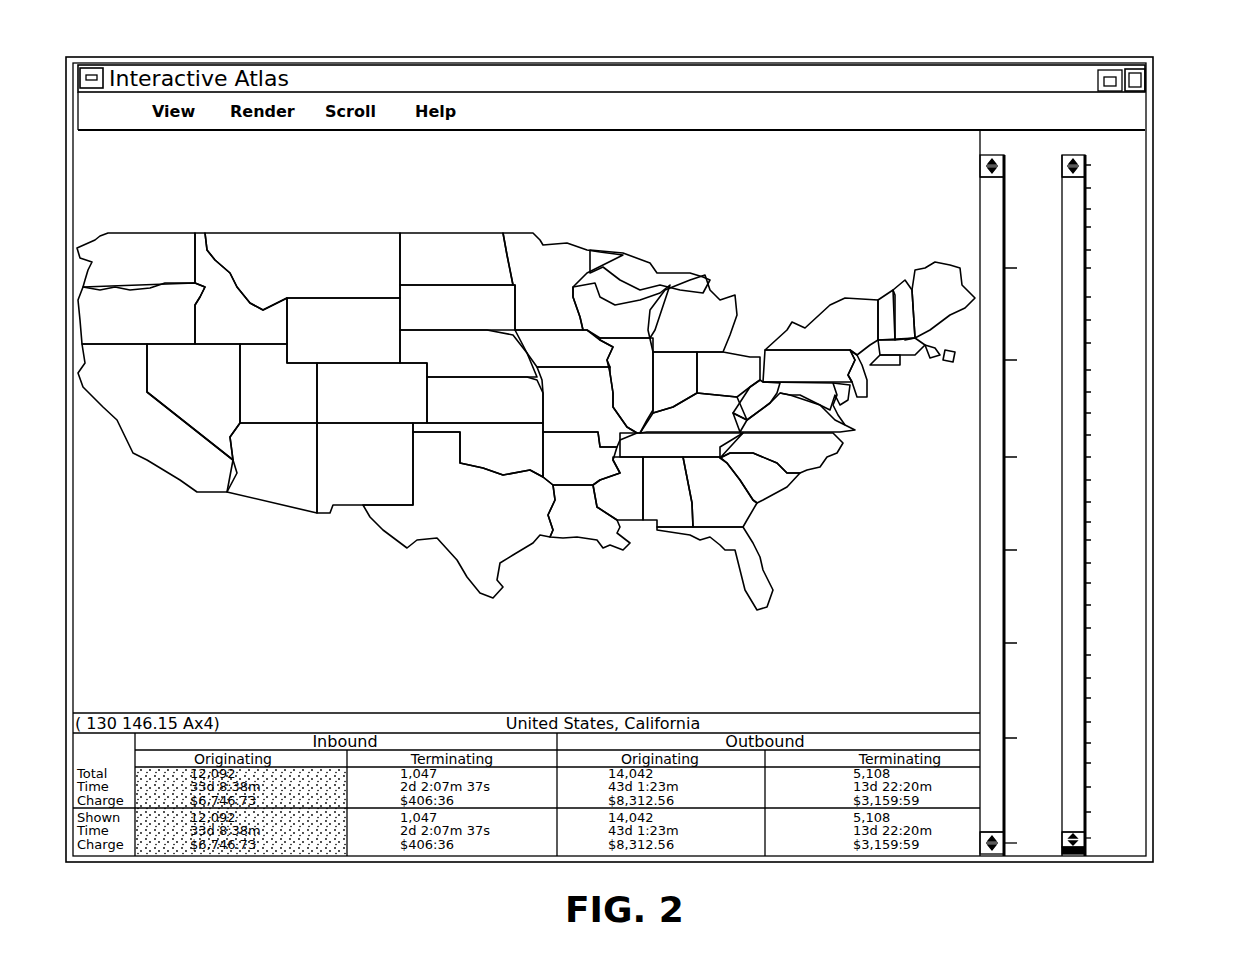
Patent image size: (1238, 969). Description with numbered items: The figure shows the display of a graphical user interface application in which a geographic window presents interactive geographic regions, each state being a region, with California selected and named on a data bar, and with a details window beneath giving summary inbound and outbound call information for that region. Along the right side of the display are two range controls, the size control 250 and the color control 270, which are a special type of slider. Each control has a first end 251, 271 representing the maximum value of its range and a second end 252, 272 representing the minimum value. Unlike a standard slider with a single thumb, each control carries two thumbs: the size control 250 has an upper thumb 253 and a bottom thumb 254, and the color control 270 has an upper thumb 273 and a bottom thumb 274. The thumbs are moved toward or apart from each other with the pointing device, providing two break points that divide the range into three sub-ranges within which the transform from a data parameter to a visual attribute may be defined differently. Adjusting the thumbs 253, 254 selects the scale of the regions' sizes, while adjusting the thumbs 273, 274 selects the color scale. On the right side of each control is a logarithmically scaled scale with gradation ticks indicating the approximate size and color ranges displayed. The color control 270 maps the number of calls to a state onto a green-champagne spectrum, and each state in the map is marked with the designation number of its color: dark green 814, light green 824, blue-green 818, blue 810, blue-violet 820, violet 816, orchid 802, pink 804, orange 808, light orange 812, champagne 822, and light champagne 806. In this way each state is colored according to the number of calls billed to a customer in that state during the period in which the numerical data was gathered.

The size control 250 is at (1008, 827).
The first end of size control 251 is at (1003, 153).
The second end of size control 252 is at (997, 857).
The upper thumb of size control 253 is at (1015, 157).
The bottom thumb of size control 254 is at (1007, 843).
The color control 270 is at (1086, 790).
The first end of color control 271 is at (1081, 153).
The second end of color control 272 is at (1086, 838).
The upper thumb of color control 273 is at (1088, 157).
The bottom thumb of color control 274 is at (1090, 853).
The orchid color designation 802 is at (626, 313).
The pink color designation 804 is at (145, 326).
The light champagne color designation 806 is at (172, 438).
The orange color designation 808 is at (167, 262).
The blue color designation 810 is at (242, 328).
The light orange color designation 812 is at (708, 278).
The dark green color designation 814 is at (472, 273).
The violet color designation 816 is at (478, 359).
The blue-green color designation 818 is at (345, 273).
The blue-violet color designation 820 is at (895, 300).
The champagne color designation 822 is at (476, 512).
The light green color designation 824 is at (464, 315).